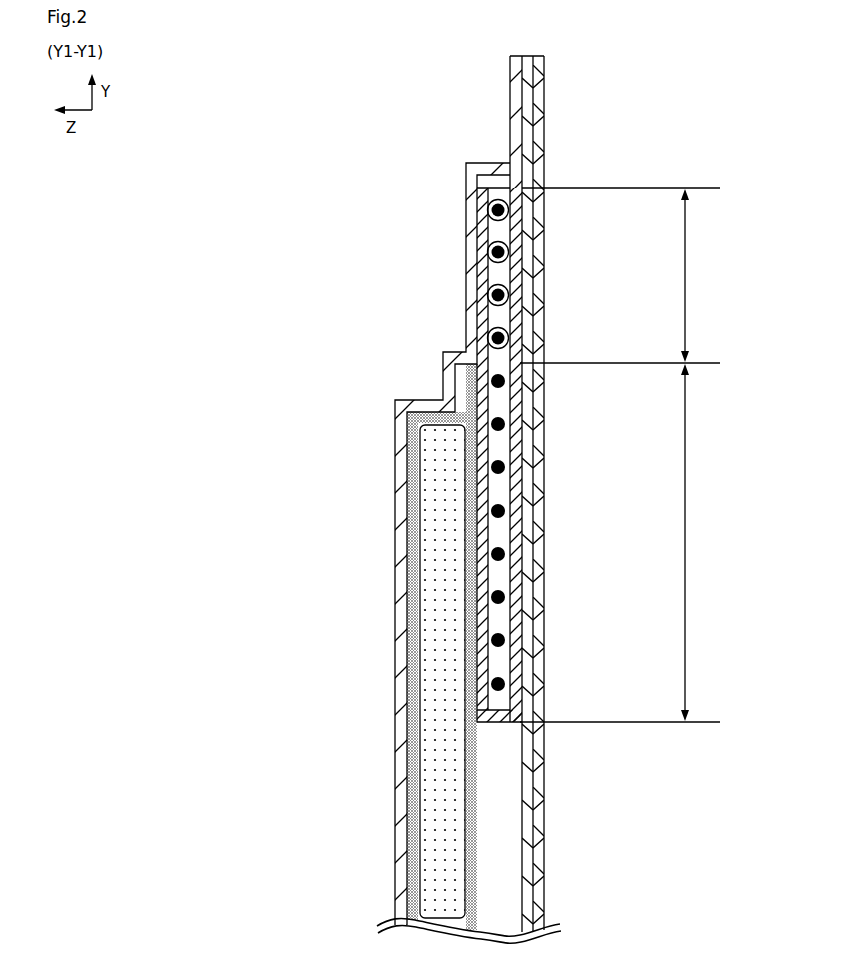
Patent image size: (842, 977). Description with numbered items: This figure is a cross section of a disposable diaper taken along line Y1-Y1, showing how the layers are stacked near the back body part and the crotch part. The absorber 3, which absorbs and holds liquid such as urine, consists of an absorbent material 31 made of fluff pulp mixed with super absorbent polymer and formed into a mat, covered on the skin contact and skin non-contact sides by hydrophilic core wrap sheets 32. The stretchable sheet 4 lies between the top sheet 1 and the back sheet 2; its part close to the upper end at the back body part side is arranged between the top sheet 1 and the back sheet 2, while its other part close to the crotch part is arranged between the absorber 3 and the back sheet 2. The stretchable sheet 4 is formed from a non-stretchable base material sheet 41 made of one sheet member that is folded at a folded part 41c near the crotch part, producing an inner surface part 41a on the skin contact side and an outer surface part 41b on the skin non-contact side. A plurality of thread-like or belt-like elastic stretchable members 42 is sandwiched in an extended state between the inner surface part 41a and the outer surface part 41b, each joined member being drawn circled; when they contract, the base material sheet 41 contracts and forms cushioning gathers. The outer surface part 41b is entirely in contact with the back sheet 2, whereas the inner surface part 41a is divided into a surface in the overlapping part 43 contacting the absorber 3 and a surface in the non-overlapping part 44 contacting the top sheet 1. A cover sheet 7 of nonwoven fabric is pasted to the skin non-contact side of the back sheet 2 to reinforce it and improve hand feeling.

The top sheet 1 is at (400, 545).
The back sheet 2 is at (527, 890).
The absorber 3 is at (388, 647).
The stretchable sheet 4 is at (531, 172).
The cover sheet 7 is at (540, 843).
The absorbent material 31 is at (440, 772).
The core wrap sheet 32 is at (412, 733).
The base material sheet 41 is at (499, 494).
The inner surface part 41a is at (520, 270).
The outer surface part 41b is at (482, 272).
The folded part 41c is at (503, 723).
The elastic stretchable members 42 is at (505, 512).
The overlapping part 43 is at (630, 543).
The non-overlapping part 44 is at (620, 275).